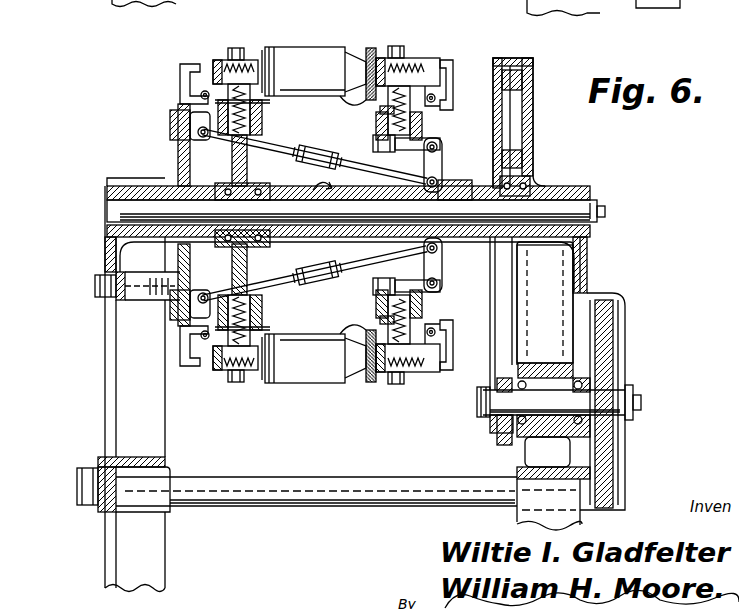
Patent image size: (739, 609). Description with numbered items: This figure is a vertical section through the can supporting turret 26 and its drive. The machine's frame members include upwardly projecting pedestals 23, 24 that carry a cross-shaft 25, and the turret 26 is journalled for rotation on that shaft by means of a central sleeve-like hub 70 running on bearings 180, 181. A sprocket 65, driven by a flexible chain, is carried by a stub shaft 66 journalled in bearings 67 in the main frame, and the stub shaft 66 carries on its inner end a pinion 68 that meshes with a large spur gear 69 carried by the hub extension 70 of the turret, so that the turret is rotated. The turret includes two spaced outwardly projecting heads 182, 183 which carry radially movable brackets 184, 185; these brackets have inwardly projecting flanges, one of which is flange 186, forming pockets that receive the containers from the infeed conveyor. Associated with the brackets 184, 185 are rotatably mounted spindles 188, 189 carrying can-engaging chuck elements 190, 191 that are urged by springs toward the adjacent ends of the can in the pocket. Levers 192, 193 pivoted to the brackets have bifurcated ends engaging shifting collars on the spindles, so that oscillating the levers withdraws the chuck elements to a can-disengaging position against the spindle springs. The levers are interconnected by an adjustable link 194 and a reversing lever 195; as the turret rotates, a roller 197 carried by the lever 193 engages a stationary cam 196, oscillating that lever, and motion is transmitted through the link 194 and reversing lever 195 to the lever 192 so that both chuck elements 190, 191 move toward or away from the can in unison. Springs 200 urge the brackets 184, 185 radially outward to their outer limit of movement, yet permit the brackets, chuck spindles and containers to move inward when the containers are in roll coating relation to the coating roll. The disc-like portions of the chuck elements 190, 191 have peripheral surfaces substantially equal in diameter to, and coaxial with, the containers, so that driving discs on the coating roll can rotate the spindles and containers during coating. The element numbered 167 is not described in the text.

The pedestal 23 is at (580, 264).
The pedestal 24 is at (113, 248).
The cross-shaft 25 is at (578, 212).
The can supporting turret 26 is at (474, 60).
The sprocket 65 is at (595, 368).
The stub shaft 66 is at (617, 400).
The bearings 67 is at (605, 372).
The pinion 68 is at (490, 420).
The spur gear 69 is at (507, 355).
The hub 70 is at (450, 197).
The plate 167 is at (258, 100).
The bearing 180 is at (518, 193).
The bearing 181 is at (245, 197).
The head 182 is at (375, 143).
The head 183 is at (240, 160).
The bracket 184 is at (388, 112).
The bracket 185 is at (250, 118).
The flange 186 is at (343, 98).
The spindle 188 is at (418, 62).
The spindle 189 is at (236, 55).
The chuck element 190 is at (366, 58).
The chuck element 191 is at (267, 50).
The lever 192 is at (440, 108).
The lever 193 is at (188, 108).
The adjustable link 194 is at (340, 285).
The reversing lever 195 is at (443, 147).
The stationary cam 196 is at (192, 115).
The roller 197 is at (170, 127).
The spring 200 is at (228, 125).